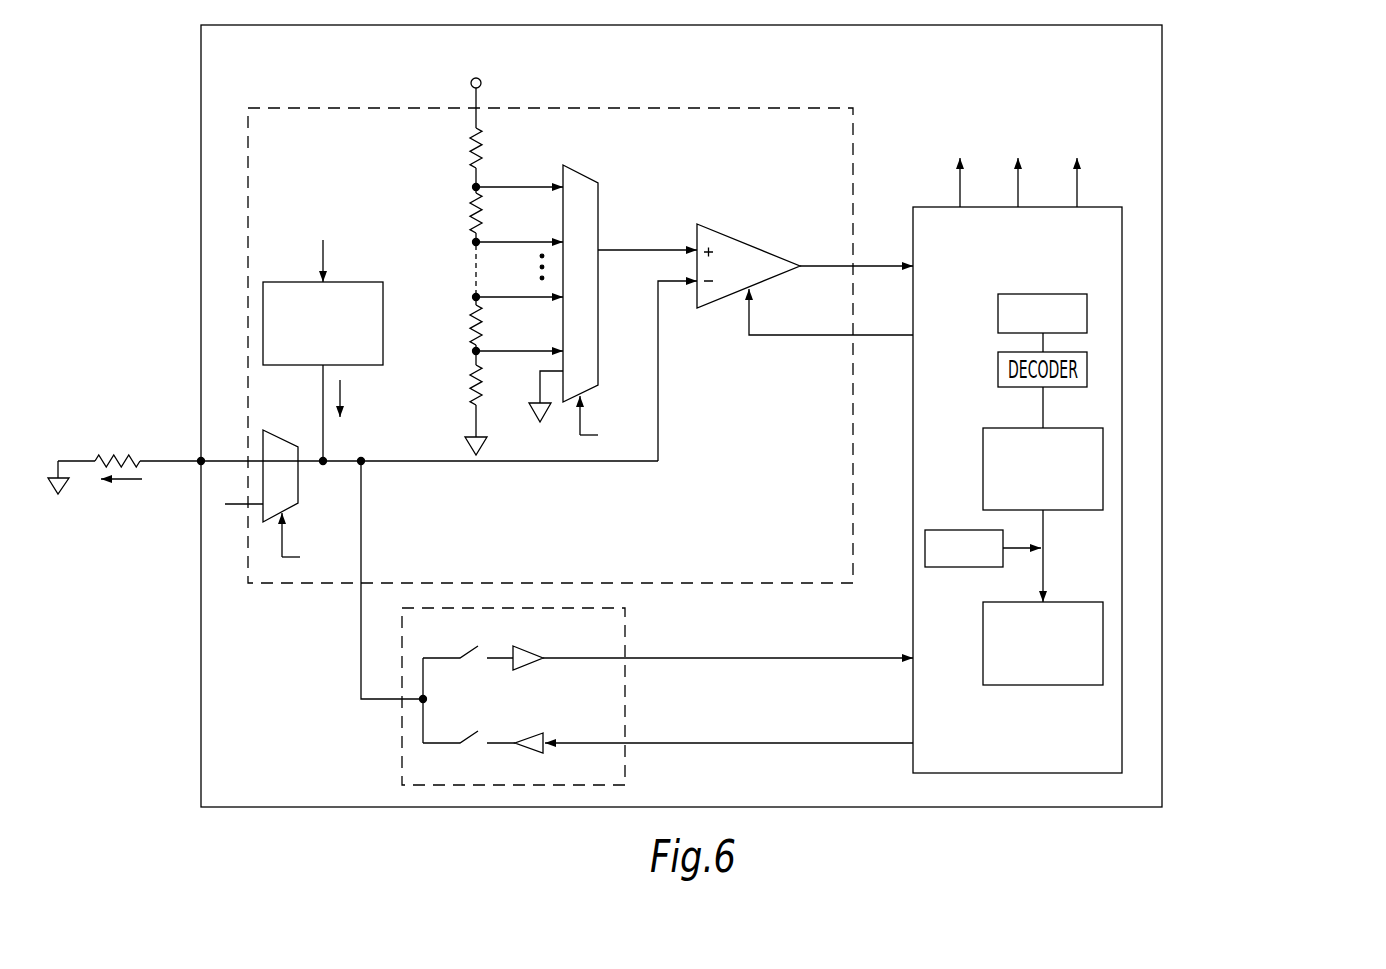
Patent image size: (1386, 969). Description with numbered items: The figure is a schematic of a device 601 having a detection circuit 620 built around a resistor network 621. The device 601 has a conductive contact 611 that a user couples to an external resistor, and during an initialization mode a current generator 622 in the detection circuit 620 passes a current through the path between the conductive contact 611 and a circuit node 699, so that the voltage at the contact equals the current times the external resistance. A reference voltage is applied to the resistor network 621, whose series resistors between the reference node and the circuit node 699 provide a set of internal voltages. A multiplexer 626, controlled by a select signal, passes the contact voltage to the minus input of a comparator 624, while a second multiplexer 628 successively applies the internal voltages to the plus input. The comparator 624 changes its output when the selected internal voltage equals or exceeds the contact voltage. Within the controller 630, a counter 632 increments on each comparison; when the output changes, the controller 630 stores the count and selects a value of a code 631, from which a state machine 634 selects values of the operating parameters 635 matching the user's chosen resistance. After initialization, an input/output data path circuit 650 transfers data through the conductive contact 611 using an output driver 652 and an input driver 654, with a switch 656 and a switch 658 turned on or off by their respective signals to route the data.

The device 601 is at (1305, 102).
The conductive contact 611 is at (198, 465).
The detection circuit 620 is at (836, 107).
The resistor network 621 is at (420, 172).
The current generator 622 is at (366, 282).
The comparator 624 is at (755, 244).
The multiplexer 626 is at (281, 438).
The multiplexer 628 is at (590, 178).
The controller 630 is at (1104, 206).
The code 631 is at (940, 528).
The counter 632 is at (1070, 294).
The state machine 634 is at (1070, 428).
The operating parameters 635 is at (1070, 602).
The input/output data path circuit 650 is at (627, 625).
The output driver 652 is at (523, 650).
The input driver 654 is at (532, 738).
The switch 656 is at (471, 660).
The switch 658 is at (471, 745).
The circuit node 699 is at (468, 452).